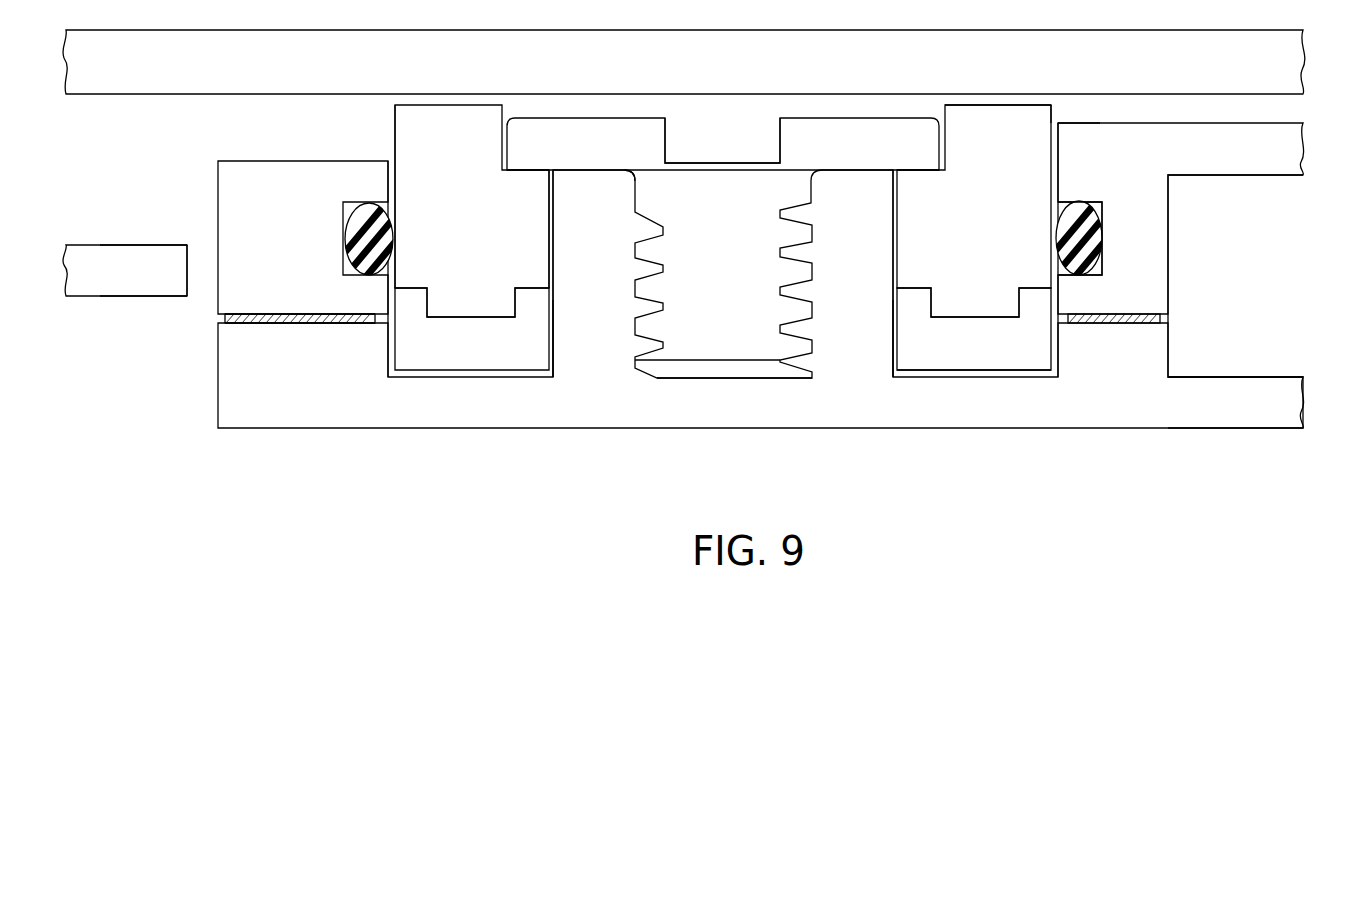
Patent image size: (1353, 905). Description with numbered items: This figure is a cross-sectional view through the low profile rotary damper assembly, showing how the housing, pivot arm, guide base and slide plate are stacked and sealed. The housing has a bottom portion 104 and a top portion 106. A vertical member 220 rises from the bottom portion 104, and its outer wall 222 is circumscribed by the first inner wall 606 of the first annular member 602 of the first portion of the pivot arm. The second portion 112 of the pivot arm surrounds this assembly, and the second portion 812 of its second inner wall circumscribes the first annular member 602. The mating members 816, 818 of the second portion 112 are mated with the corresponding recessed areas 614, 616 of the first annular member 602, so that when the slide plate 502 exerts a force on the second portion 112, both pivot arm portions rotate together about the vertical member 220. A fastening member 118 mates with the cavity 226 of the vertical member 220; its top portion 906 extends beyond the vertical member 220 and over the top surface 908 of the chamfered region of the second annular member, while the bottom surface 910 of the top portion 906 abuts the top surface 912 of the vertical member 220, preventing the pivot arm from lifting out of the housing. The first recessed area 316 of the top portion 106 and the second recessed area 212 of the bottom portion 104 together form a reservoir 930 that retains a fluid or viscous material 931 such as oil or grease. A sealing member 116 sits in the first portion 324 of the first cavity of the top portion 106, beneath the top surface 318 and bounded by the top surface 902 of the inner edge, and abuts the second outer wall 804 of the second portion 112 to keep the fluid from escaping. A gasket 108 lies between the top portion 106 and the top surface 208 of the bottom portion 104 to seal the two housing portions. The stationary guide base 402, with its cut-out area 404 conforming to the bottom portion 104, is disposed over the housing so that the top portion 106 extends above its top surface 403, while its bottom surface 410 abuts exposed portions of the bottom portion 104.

The slide plate 502 is at (66, 34).
The top surface of the vertical member 912 is at (583, 162).
The top portion of the fastening member 906 is at (612, 152).
The top surface of the chamfered region 908 is at (906, 162).
The second portion of the pivot arm 112 is at (998, 118).
The second outer wall 804 is at (1062, 113).
The first portion of the first cavity 324 is at (340, 200).
The top surface of the top portion 318 is at (365, 187).
The top portion 106 is at (218, 182).
The fastening member 118 is at (731, 163).
The top surface of the guide base 403 is at (122, 245).
The cut-out area 404 is at (202, 255).
The top surface of the bottom portion 208 is at (267, 310).
The mating member 816 is at (480, 302).
The second portion of the second inner wall 812 is at (556, 208).
The bottom surface of the top portion of the fastening member 910 is at (613, 180).
The sealing member 116 is at (1062, 220).
The mating member 818 is at (968, 303).
The reservoir 930 is at (1257, 219).
The top surface of the inner edge 902 is at (1104, 270).
The fluid or viscous material 931 is at (1262, 304).
The first recessed area 316 is at (1282, 195).
The guide base 402 is at (65, 278).
The gasket 108 is at (218, 316).
The bottom surface of the guide base 410 is at (143, 297).
The bottom portion 104 is at (218, 371).
The recessed area 614 is at (456, 322).
The outer wall of the vertical member 222 is at (549, 347).
The vertical member 220 is at (593, 297).
The cavity of the vertical member 226 is at (716, 382).
The first inner wall 606 is at (890, 348).
The recessed area 616 is at (991, 322).
The first annular member 602 is at (955, 357).
The second recessed area 212 is at (1283, 360).